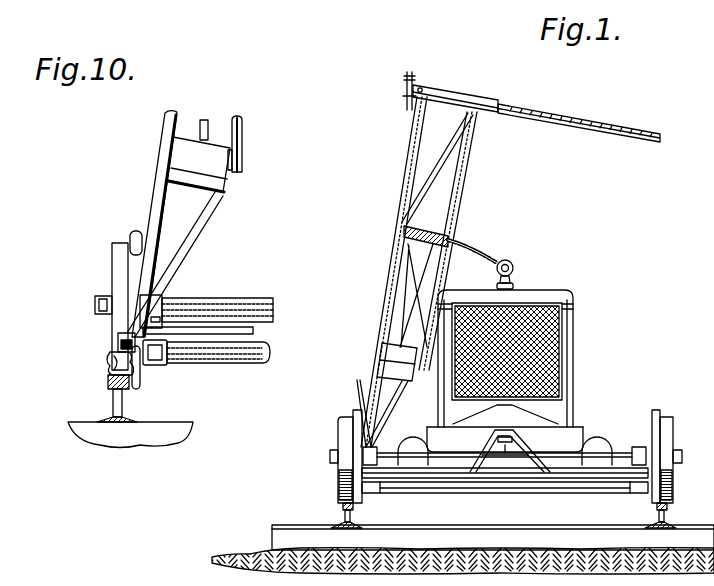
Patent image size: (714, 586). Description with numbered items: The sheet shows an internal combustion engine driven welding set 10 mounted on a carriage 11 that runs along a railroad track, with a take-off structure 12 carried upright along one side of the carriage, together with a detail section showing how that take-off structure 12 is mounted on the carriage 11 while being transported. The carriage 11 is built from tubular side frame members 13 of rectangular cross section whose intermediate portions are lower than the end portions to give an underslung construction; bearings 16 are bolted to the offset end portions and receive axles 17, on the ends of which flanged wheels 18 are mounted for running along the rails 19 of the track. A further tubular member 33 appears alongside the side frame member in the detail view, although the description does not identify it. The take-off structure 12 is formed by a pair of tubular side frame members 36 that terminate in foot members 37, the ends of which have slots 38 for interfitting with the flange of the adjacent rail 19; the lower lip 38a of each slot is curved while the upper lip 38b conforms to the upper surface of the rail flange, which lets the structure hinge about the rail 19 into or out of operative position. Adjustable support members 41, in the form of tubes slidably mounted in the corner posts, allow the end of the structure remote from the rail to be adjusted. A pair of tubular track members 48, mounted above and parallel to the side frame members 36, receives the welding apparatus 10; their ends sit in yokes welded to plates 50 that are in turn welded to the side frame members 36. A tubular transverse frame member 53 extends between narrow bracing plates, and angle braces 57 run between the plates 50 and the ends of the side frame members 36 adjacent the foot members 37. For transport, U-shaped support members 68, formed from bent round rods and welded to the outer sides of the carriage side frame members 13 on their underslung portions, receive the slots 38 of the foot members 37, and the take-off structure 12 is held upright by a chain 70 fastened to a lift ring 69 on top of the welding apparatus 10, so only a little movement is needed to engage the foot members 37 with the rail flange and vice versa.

In FIG. 1, the internal combustion engine driven welding set 10 is at (580, 354).
In FIG. 1, the carriage 11 is at (598, 428).
In FIG. 1, the take-off structure 12 is at (472, 183).
In FIG. 10, the tubular side frame members 13 is at (187, 364).
In FIG. 10, the bearings 16 is at (163, 297).
In FIG. 10, the axles 17 is at (230, 307).
In FIG. 10, the flanged wheels 18 is at (117, 252).
In FIG. 1, the rails 19 is at (348, 515).
In FIG. 10, the rails 19 is at (123, 405).
In FIG. 10, the tube 33 is at (263, 353).
In FIG. 1, the side frame members 36 is at (372, 388).
In FIG. 10, the side frame members 36 is at (158, 187).
In FIG. 10, the foot members 37 is at (121, 335).
In FIG. 10, the slots 38 is at (115, 353).
In FIG. 10, the lower lip 38a is at (113, 373).
In FIG. 10, the upper lip 38b is at (138, 373).
In FIG. 1, the adjustable support members 41 is at (622, 130).
In FIG. 10, the tubular track members 48 is at (242, 133).
In FIG. 10, the plates 50 is at (177, 140).
In FIG. 1, the tubular transverse frame member 53 is at (402, 230).
In FIG. 10, the angle braces 57 is at (197, 223).
In FIG. 10, the U-shaped support members 68 is at (117, 347).
In FIG. 1, the lift ring 69 is at (514, 268).
In FIG. 1, the chain 70 is at (482, 252).